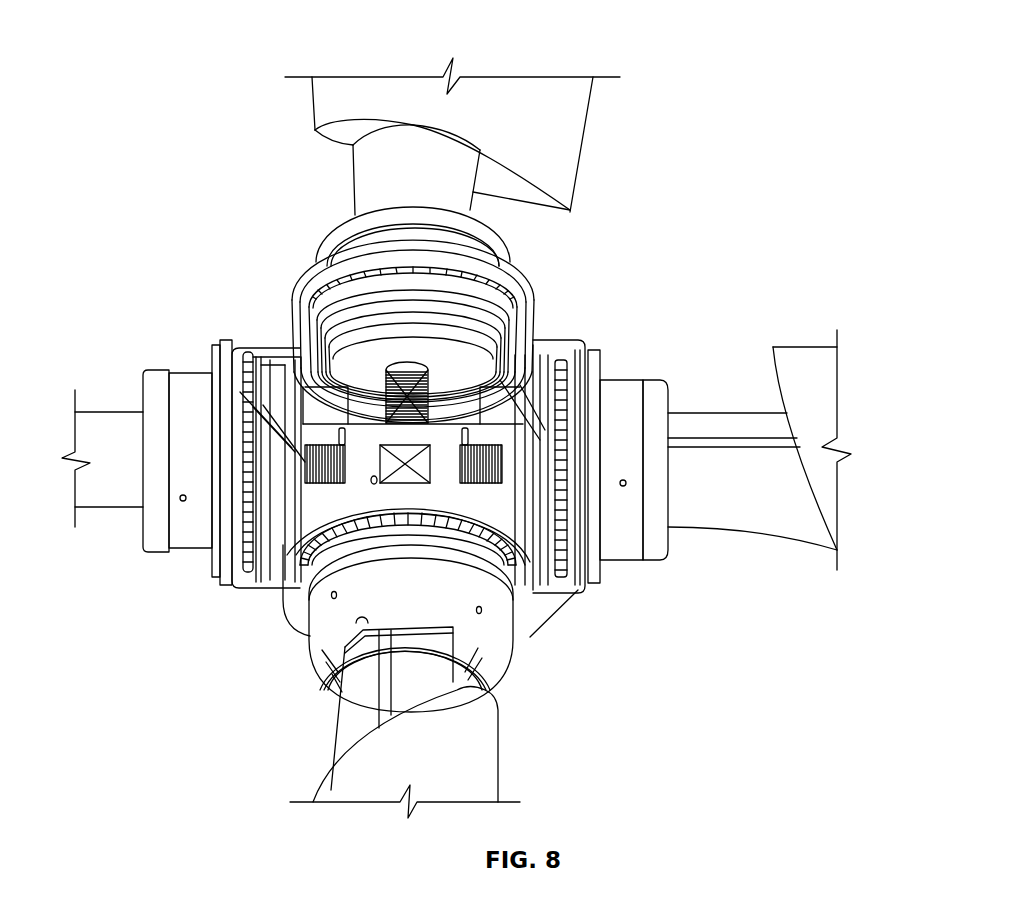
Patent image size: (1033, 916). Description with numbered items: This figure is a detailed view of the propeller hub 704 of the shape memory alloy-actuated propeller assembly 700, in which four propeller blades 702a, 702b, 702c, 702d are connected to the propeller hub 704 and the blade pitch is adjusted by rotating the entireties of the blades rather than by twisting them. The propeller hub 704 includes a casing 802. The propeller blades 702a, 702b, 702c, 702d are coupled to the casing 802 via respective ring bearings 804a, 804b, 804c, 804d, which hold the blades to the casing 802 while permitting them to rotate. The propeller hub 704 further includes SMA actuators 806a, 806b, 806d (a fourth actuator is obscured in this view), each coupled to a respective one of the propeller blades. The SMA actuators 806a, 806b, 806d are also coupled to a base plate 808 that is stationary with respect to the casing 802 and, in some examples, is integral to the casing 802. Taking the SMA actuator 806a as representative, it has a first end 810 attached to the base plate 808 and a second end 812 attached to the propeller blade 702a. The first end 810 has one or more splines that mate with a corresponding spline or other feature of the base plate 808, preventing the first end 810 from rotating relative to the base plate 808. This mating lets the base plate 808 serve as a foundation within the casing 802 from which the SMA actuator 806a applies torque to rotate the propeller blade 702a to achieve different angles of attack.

The SMA-actuated propeller assembly 700 is at (205, 50).
The propeller blade 702a is at (583, 150).
The propeller blade 702b is at (793, 347).
The propeller blade 702c is at (488, 747).
The propeller blade 702d is at (118, 420).
The propeller hub 704 is at (200, 235).
The casing 802 is at (568, 347).
The ring bearing 804a is at (508, 293).
The ring bearing 804b is at (560, 378).
The ring bearing 804c is at (500, 625).
The ring bearing 804d is at (226, 582).
The SMA actuator 806a is at (408, 385).
The SMA actuator 806b is at (492, 465).
The SMA actuator 806d is at (317, 462).
The base plate 808 is at (447, 392).
The first end 810 is at (382, 400).
The second end 812 is at (398, 318).